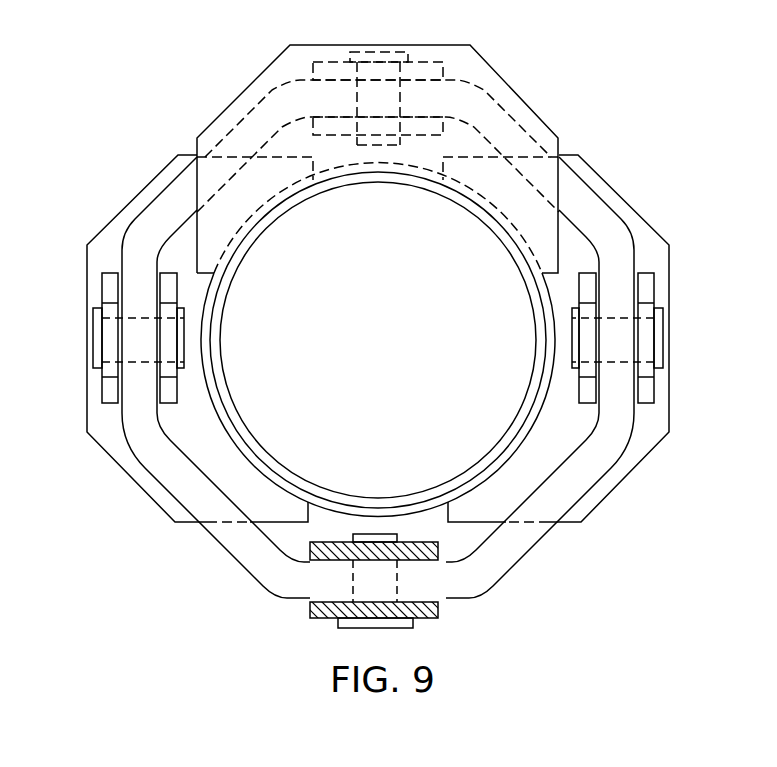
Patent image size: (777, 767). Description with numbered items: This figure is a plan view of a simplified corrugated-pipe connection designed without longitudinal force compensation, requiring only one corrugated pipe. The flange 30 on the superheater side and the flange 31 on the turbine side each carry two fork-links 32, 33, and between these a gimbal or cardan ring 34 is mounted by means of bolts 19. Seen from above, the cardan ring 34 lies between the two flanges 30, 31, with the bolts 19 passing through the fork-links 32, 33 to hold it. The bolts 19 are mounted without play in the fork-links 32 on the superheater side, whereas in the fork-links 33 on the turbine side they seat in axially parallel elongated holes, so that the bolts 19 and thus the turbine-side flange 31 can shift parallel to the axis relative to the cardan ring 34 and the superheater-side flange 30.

The bolt 19 is at (102, 343).
The flange on superheater side 30 is at (102, 230).
The flange on turbine side 31 is at (480, 55).
The fork-links on superheater side 32 is at (170, 395).
The fork-links on turbine side 33 is at (437, 610).
The gimbal or cardan ring 34 is at (575, 205).